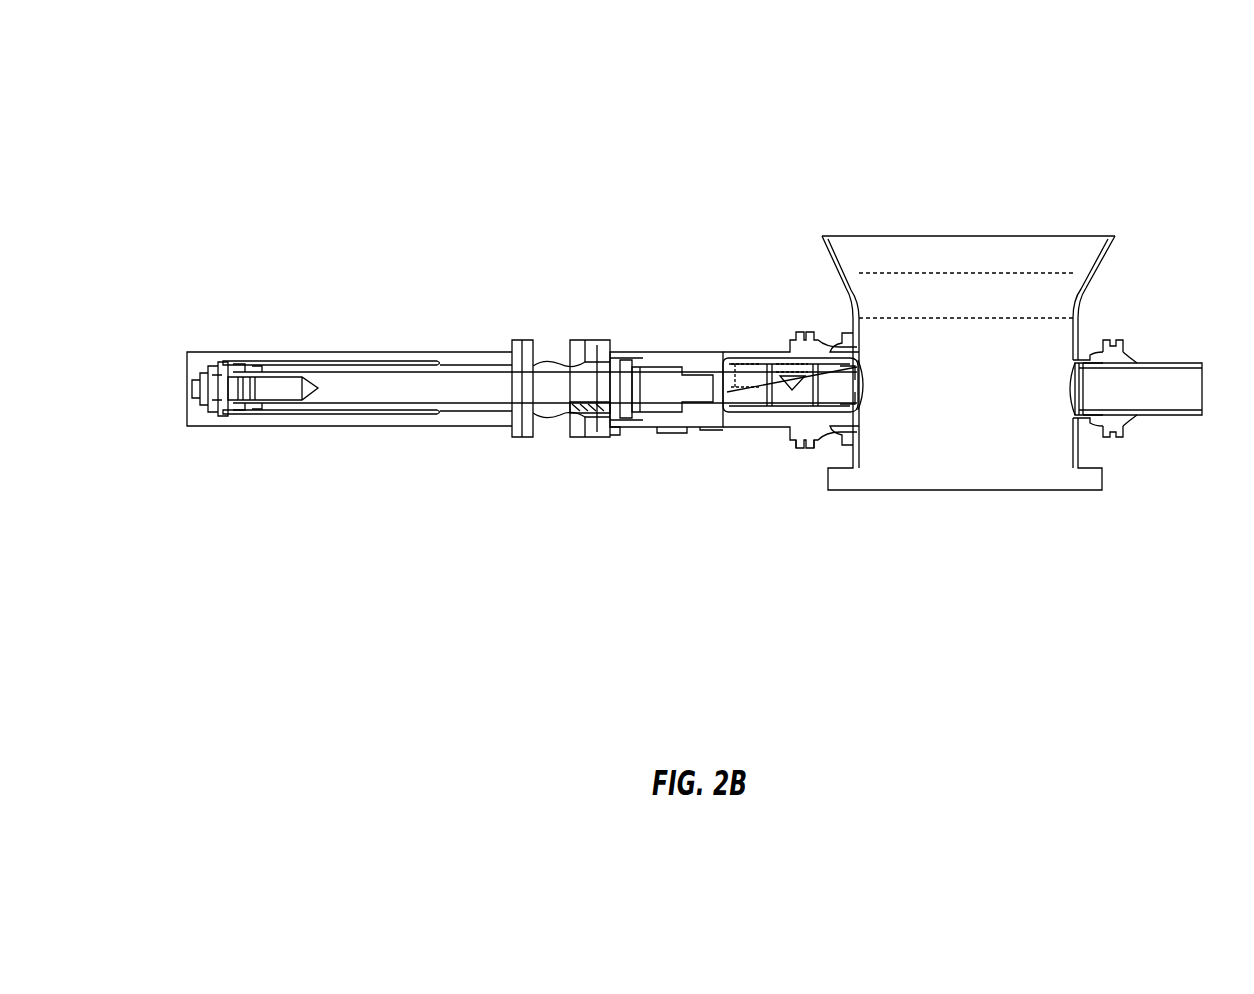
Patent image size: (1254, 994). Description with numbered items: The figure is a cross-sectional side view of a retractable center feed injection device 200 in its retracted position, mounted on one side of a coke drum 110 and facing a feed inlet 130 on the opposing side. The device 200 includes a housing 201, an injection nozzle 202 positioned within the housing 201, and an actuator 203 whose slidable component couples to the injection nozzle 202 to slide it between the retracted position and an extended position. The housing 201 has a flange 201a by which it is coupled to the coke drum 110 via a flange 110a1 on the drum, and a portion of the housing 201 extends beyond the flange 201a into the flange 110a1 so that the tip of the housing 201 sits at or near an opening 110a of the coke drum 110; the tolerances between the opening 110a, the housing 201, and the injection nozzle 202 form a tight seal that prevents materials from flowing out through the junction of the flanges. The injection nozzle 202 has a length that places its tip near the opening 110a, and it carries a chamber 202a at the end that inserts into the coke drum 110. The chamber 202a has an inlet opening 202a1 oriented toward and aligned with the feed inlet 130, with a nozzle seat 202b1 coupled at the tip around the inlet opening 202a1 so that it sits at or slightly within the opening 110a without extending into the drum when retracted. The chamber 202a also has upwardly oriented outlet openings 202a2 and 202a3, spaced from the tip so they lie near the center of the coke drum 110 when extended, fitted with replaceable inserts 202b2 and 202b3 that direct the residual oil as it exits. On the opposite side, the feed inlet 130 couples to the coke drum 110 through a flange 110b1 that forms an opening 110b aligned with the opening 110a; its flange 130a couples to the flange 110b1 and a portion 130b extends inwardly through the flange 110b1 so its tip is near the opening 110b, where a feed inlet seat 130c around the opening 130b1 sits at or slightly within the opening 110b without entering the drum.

The retractable center feed injection device 200 is at (300, 178).
The actuator 203 is at (270, 352).
The housing 201 is at (635, 350).
The flange 201a is at (800, 440).
The injection nozzle 202 is at (690, 352).
The chamber 202a is at (745, 410).
The inlet opening 202a1 is at (865, 380).
The outlet opening 202a2 is at (745, 350).
The outlet opening 202a3 is at (785, 352).
The nozzle seat 202b1 is at (870, 400).
The insert 202b2 is at (720, 350).
The insert 202b3 is at (770, 350).
The coke drum 110 is at (1043, 232).
The opening 110a is at (863, 400).
The flange 110a1 is at (805, 442).
The opening 110b is at (1073, 410).
The flange 110b1 is at (1105, 435).
The feed inlet 130 is at (1165, 360).
The flange 130a is at (1118, 340).
The portion 130b is at (1092, 358).
The opening 130b1 is at (1075, 392).
The feed inlet seat 130c is at (1075, 380).